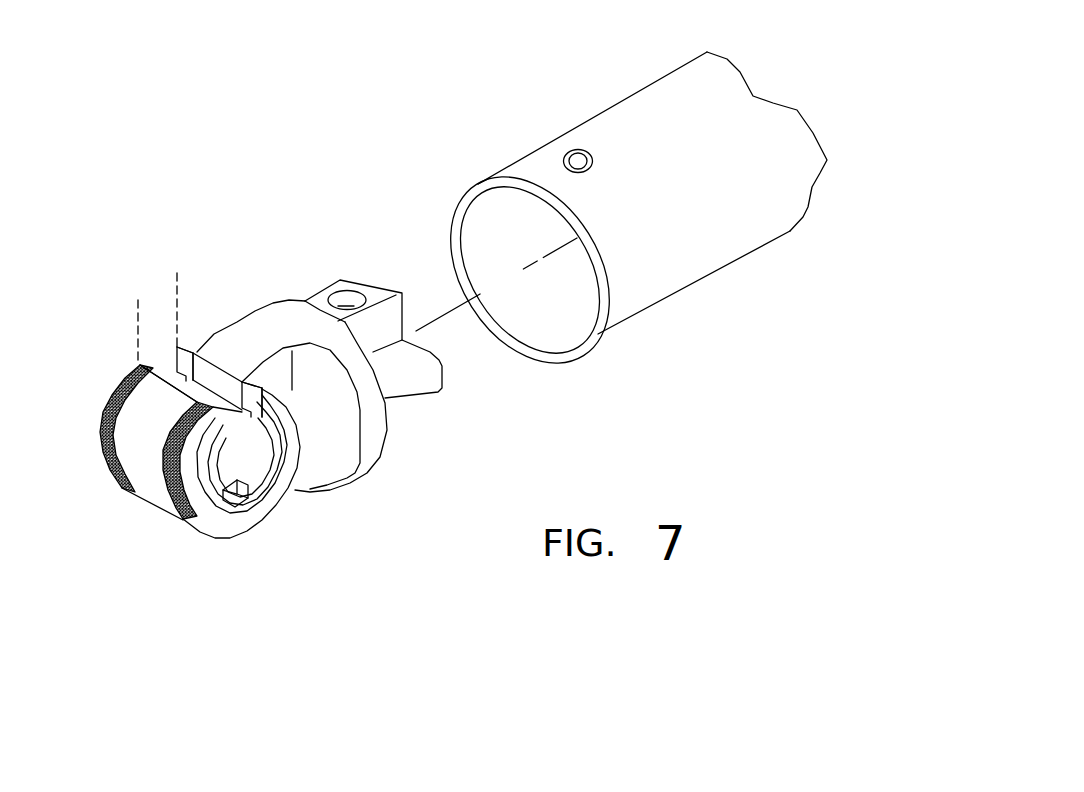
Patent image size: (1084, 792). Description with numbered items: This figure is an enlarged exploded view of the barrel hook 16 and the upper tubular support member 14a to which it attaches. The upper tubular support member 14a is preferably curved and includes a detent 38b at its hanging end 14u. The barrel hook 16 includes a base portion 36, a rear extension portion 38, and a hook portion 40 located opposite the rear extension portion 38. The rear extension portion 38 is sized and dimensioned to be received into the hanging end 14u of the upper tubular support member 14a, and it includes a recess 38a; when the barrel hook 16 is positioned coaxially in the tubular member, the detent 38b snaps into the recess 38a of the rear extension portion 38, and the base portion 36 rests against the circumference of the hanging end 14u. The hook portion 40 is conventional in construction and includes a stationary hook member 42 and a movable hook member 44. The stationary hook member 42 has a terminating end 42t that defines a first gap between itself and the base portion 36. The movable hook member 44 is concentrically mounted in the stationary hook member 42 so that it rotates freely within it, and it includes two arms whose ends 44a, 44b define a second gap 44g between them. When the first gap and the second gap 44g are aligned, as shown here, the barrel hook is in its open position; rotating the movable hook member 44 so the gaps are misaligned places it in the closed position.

The upper tubular support member 14a is at (621, 222).
The hanging end 14u is at (483, 100).
The barrel hook 16 is at (218, 191).
The base portion 36 is at (318, 461).
The rear extension portion 38 is at (486, 396).
The recess 38a is at (359, 244).
The detent 38b is at (594, 86).
The hook portion 40 is at (293, 624).
The stationary hook member 42 is at (115, 474).
The terminating end 42t is at (159, 394).
The movable hook member 44 is at (165, 458).
The arm end 44a is at (195, 401).
The arm end 44b is at (267, 403).
The second gap 44g is at (154, 292).